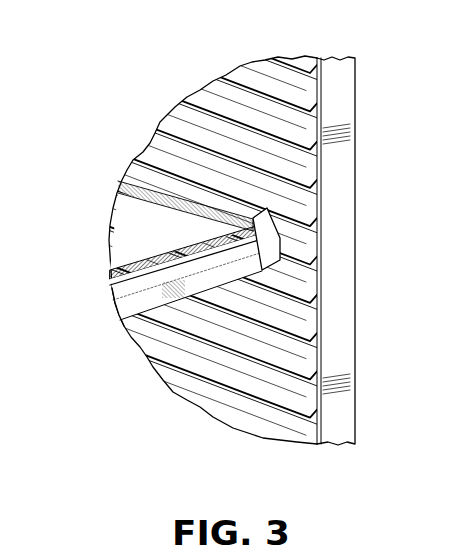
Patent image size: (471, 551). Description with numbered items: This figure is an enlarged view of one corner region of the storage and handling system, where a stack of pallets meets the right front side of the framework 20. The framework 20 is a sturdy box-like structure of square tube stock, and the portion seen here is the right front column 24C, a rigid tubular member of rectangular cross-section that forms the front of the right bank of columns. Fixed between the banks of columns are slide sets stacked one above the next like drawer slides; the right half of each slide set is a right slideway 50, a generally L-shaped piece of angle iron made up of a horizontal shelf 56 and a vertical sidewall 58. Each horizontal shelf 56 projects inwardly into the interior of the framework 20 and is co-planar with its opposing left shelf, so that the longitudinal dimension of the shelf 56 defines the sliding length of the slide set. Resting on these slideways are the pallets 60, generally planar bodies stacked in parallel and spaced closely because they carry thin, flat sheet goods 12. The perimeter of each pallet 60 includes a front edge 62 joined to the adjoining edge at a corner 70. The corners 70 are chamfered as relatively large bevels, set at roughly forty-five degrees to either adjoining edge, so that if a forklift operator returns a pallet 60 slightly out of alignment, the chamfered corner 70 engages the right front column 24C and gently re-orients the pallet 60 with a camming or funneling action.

The sheet goods 12 is at (137, 218).
The framework 20 is at (357, 58).
The right front column 24C is at (340, 284).
The right slideway 50 is at (142, 366).
The horizontal shelf 56 is at (213, 88).
The vertical sidewall 58 is at (230, 76).
The pallet 60 is at (107, 310).
The front edge 62 is at (228, 271).
The corner 70 is at (282, 236).